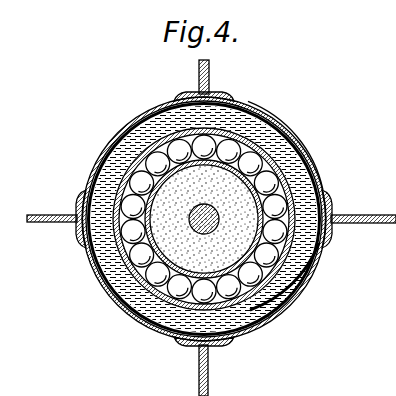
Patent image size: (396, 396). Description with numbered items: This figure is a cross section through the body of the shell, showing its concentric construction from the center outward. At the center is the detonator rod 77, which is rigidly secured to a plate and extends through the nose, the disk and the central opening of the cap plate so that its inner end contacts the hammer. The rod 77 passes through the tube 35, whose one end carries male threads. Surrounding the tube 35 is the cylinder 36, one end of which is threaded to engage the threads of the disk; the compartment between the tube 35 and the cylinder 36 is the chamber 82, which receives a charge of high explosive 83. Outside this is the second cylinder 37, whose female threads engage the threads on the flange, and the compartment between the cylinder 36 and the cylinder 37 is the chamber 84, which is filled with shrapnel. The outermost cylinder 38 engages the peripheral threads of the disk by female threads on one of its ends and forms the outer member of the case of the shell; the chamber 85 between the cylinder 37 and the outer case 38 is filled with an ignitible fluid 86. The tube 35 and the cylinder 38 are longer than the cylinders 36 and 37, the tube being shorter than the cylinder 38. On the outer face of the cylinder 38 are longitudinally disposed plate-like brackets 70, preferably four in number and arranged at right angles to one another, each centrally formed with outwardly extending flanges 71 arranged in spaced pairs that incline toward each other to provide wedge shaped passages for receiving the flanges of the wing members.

The tube 35 is at (312, 172).
The cylinder 36 is at (113, 152).
The second cylinder 37 is at (100, 168).
The cylinder 38 is at (152, 120).
The brackets 70 is at (216, 93).
The flanges 71 is at (80, 232).
The detonator rod 77 is at (262, 162).
The chamber 82 is at (218, 210).
The high explosive charge 83 is at (242, 163).
The chamber 84 is at (302, 280).
The chamber 85 is at (312, 266).
The ignitible fluid 86 is at (331, 240).